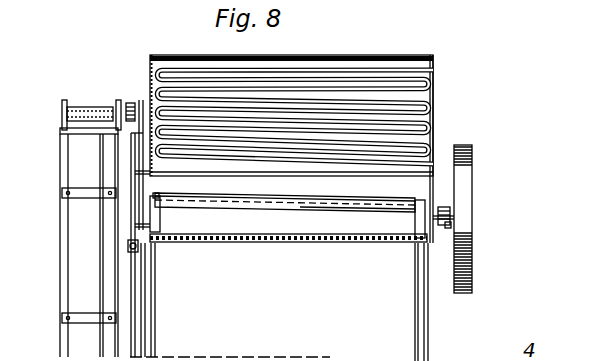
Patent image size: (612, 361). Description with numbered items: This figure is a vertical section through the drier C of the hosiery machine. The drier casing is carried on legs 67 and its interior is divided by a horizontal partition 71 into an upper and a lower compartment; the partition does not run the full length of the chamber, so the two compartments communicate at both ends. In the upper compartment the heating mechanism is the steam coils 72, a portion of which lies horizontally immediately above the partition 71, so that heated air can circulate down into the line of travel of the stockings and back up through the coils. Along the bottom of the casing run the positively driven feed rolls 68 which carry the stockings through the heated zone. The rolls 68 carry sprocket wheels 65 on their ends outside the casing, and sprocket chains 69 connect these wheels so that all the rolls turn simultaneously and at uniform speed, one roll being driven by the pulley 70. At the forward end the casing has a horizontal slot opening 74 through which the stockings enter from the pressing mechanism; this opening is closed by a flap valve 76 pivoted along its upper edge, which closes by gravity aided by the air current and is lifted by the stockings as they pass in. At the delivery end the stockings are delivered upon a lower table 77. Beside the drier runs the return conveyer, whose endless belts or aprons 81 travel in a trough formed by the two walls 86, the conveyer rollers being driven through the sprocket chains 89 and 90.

The drier C is at (393, 57).
The steam coils 72 is at (300, 92).
The horizontal partition 71 is at (263, 171).
The flap valve 76 is at (309, 201).
The horizontal slot opening 74 is at (362, 202).
The lower table 77 is at (159, 196).
The feed rolls 68 is at (160, 220).
The legs 67 is at (146, 301).
The endless belts or aprons 81 is at (87, 105).
The walls 86 is at (62, 104).
The sprocket chain 89 is at (130, 103).
The sprocket chain 90 is at (128, 136).
The pulley 70 is at (473, 208).
The sprocket wheels 65 is at (438, 208).
The sprocket chains 69 is at (447, 229).